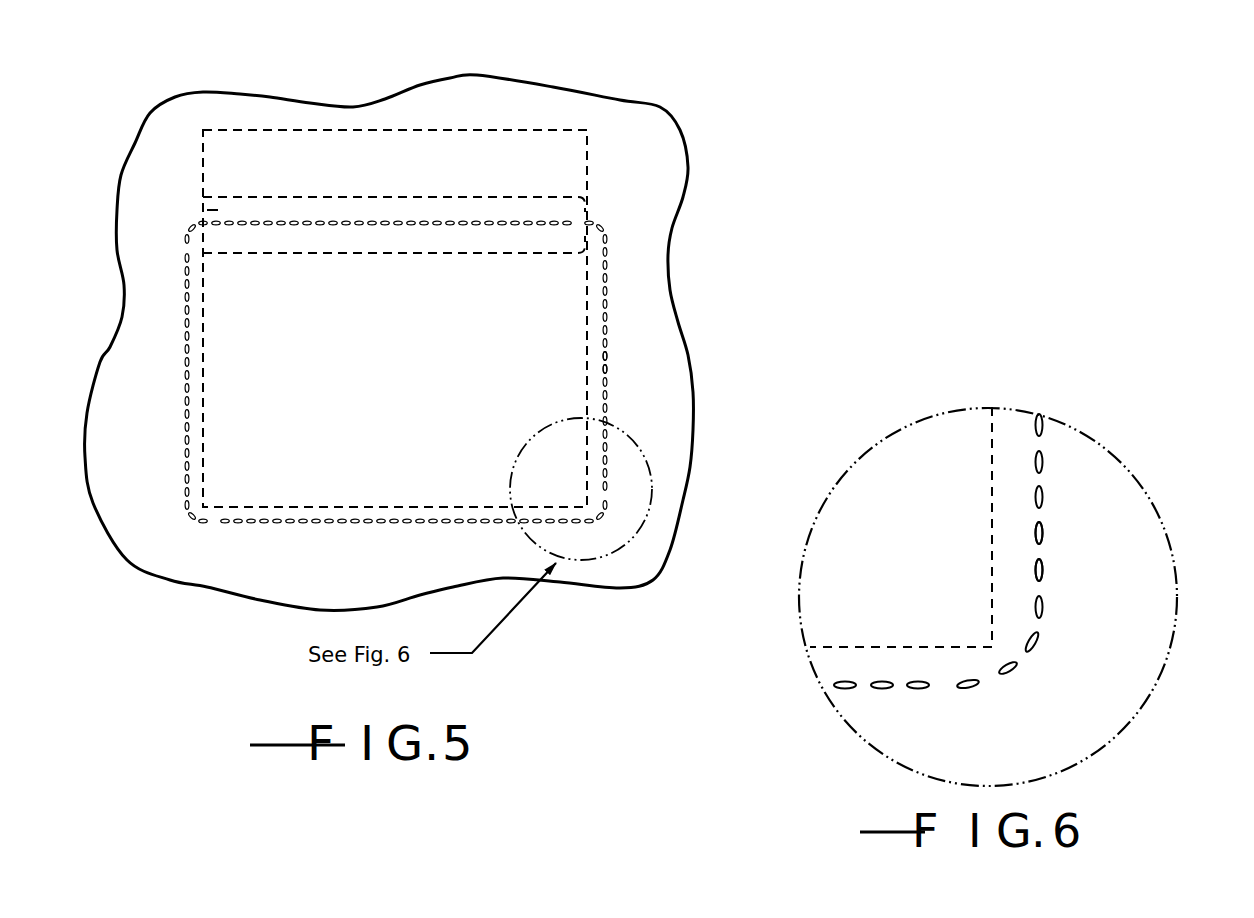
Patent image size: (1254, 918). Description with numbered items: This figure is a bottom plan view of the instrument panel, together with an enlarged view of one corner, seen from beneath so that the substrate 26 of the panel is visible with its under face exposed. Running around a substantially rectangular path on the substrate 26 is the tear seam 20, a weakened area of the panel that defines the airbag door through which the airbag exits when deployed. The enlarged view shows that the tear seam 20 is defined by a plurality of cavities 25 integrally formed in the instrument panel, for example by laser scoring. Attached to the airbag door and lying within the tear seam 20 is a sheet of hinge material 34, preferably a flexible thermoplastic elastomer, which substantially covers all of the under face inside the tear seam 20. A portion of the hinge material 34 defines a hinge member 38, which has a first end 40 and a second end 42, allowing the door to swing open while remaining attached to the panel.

In FIG. 5, the tear seam 20 is at (612, 311).
In FIG. 6, the tear seam 20 is at (1047, 486).
In FIG. 5, the cavities 25 is at (608, 363).
In FIG. 6, the cavities 25 is at (1047, 535).
In FIG. 5, the substrate 26 is at (533, 108).
In FIG. 6, the substrate 26 is at (903, 723).
In FIG. 5, the sheet of hinge material 34 is at (567, 173).
In FIG. 6, the sheet of hinge material 34 is at (940, 448).
In FIG. 5, the hinge member 38 is at (567, 210).
In FIG. 5, the first end 40 is at (200, 207).
In FIG. 5, the second end 42 is at (555, 242).